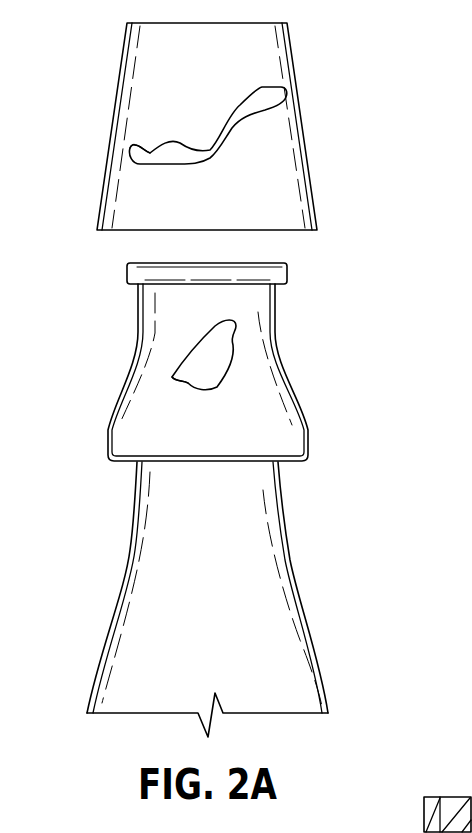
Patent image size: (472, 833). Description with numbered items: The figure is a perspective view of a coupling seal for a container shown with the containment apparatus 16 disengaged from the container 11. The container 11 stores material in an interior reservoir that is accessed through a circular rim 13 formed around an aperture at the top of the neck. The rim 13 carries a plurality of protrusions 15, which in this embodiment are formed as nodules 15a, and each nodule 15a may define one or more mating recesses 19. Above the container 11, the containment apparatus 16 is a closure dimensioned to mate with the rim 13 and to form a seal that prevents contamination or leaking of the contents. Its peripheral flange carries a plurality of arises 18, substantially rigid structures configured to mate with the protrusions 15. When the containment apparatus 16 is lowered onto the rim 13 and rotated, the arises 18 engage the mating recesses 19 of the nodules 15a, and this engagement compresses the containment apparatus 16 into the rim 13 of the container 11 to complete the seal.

The container 11 is at (292, 572).
The rim 13 is at (277, 333).
The protrusions 15 is at (175, 363).
The nodules 15a is at (172, 378).
The containment apparatus 16 is at (307, 115).
The arises 18 is at (225, 156).
The mating recesses 19 is at (137, 163).